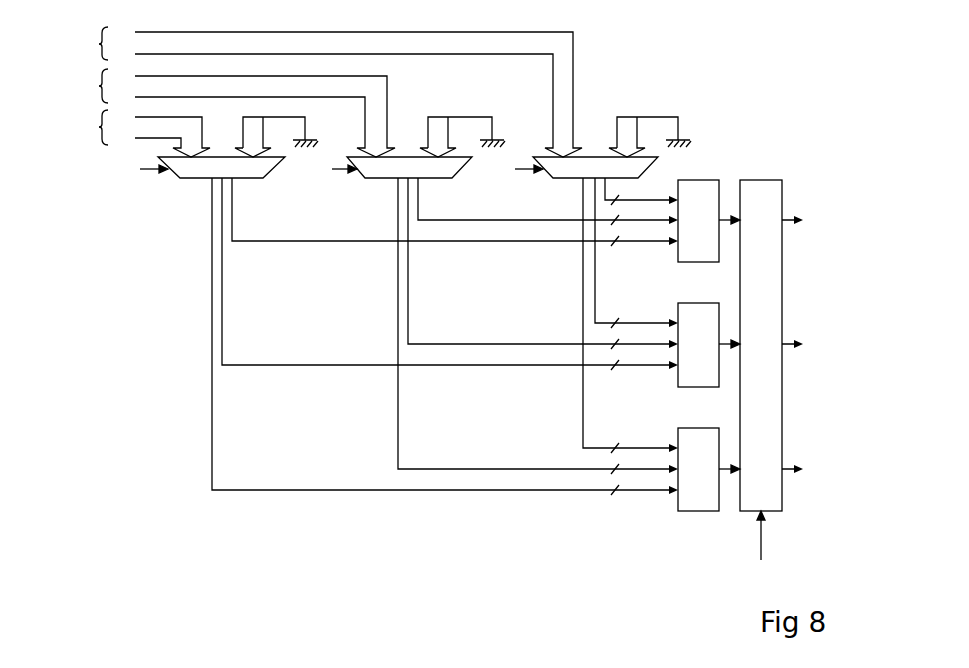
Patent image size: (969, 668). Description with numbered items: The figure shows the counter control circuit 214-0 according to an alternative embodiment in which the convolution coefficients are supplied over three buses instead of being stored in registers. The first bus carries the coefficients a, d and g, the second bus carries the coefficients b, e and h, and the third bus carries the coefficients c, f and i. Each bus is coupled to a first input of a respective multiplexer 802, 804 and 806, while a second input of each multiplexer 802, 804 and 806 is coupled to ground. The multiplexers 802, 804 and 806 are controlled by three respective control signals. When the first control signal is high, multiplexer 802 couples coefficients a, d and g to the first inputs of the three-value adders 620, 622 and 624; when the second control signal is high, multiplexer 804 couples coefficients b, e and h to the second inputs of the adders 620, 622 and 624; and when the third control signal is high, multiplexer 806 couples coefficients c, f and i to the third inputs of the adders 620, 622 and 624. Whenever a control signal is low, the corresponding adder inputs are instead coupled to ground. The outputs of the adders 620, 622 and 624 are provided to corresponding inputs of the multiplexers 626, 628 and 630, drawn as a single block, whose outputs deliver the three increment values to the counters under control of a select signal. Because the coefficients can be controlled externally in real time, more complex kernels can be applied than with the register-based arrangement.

The counter control circuit 214-0 is at (704, 77).
The three-value adder 620 is at (712, 186).
The three-value adder 622 is at (697, 311).
The three-value adder 624 is at (700, 432).
The multiplexer 626 is at (794, 353).
The multiplexer 628 is at (794, 353).
The multiplexer 630 is at (767, 188).
The multiplexer 802 is at (643, 168).
The multiplexer 804 is at (442, 172).
The multiplexer 806 is at (262, 170).